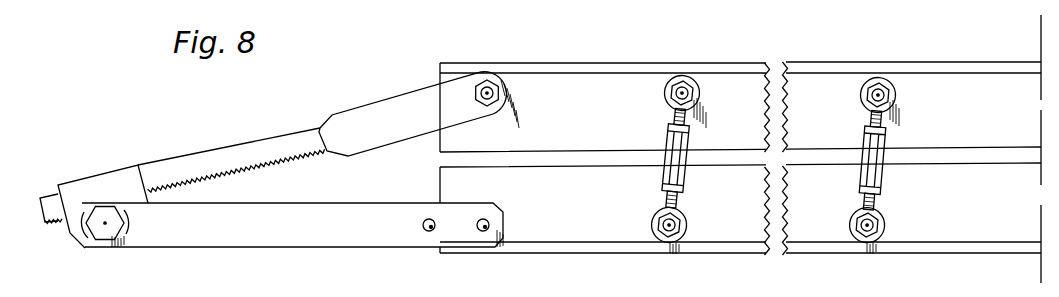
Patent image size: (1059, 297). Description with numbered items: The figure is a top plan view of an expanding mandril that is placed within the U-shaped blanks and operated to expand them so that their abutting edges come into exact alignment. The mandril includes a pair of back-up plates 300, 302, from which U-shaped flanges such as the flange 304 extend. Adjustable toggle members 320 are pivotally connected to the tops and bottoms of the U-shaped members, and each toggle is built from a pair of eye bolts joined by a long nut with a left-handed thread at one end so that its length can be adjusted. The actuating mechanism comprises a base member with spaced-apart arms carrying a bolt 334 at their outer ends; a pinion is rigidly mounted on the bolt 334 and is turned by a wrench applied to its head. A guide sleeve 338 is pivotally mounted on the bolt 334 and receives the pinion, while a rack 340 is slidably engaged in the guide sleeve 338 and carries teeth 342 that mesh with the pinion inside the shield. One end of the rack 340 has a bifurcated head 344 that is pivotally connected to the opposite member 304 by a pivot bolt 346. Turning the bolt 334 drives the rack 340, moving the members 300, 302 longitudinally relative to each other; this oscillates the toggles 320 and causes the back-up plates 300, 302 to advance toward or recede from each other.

The back-up plate 300 is at (915, 65).
The back-up plate 302 is at (980, 247).
The U-shaped flange 304 is at (438, 142).
The adjustable toggle member 320 is at (888, 147).
The bolt 334 is at (108, 233).
The guide sleeve 338 is at (95, 175).
The rack 340 is at (202, 157).
The teeth 342 is at (258, 168).
The bifurcated head 344 is at (370, 110).
The pivot bolt 346 is at (483, 85).